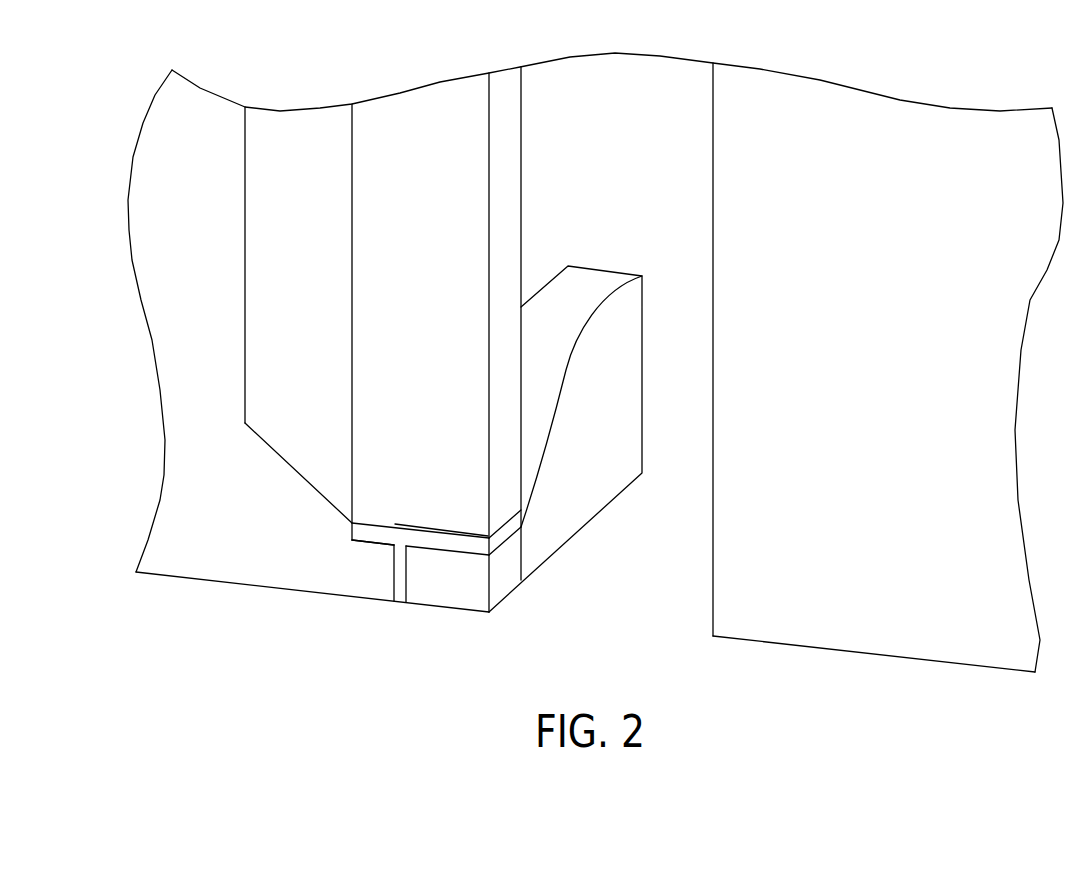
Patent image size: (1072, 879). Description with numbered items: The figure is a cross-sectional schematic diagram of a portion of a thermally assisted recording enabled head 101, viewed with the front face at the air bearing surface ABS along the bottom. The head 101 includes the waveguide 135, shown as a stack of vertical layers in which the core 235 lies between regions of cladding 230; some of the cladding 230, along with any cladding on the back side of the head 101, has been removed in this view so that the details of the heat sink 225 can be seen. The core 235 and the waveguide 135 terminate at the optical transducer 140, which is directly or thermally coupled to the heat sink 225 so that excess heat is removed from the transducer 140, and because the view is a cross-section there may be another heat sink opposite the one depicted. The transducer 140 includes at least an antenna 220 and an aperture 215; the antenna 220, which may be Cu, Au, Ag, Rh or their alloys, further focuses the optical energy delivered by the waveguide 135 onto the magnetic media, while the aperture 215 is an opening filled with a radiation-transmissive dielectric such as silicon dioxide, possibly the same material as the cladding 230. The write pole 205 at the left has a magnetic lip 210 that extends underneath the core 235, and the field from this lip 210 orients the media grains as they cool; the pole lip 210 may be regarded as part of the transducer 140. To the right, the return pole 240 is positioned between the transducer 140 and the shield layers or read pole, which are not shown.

The head 101 is at (131, 117).
The waveguide 135 is at (713, 56).
The optical transducer 140 is at (488, 536).
The write pole 205 is at (240, 489).
The magnetic lip 210 is at (366, 575).
The aperture 215 is at (398, 603).
The antenna 220 is at (450, 612).
The heat sink 225 is at (597, 270).
The cladding 230 is at (312, 284).
The core 235 is at (424, 284).
The return pole 240 is at (850, 391).
The air bearing surface ABS is at (889, 662).